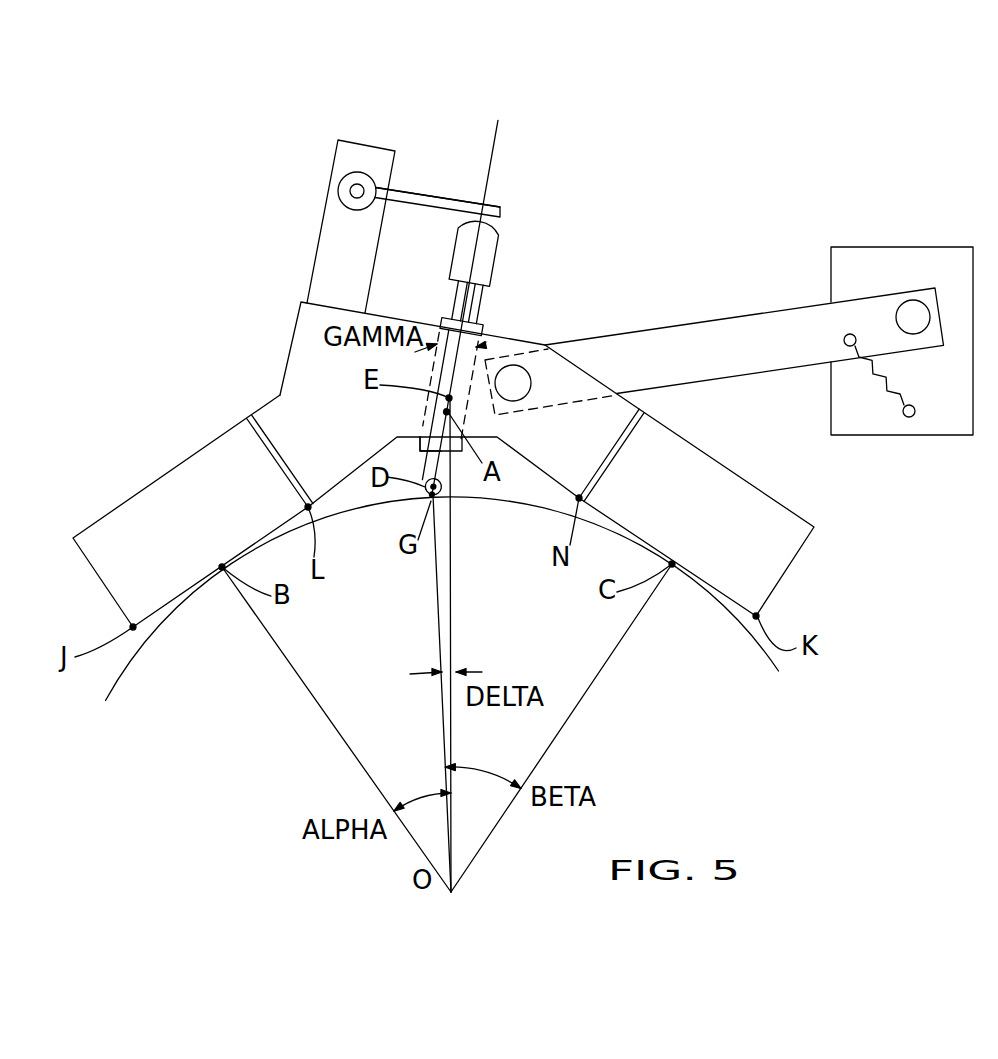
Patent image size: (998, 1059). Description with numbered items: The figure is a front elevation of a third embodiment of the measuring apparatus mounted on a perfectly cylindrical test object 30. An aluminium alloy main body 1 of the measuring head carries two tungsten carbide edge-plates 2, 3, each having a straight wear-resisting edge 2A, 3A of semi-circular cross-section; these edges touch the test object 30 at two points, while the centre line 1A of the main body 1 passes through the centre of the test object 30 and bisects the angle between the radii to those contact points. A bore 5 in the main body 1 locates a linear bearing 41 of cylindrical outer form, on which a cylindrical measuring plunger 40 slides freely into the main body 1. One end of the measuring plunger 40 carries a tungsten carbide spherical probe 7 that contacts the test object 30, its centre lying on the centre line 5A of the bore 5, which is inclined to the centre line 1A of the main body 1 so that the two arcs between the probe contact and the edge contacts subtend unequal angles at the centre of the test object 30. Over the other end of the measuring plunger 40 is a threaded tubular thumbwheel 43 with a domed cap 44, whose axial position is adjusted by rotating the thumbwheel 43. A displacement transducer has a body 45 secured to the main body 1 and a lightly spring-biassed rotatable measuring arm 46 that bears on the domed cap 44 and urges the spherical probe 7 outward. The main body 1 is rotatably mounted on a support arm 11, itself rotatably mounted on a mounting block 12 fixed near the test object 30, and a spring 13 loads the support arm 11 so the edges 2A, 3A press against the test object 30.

The main body 1 is at (290, 420).
The centre line of the main body 1A is at (452, 602).
The edge-plate 2 is at (193, 483).
The wear resisting edge 2A is at (160, 612).
The edge-plate 3 is at (745, 507).
The wear resisting edge 3A is at (728, 609).
The bore 5 is at (493, 336).
The centre line of the bore 5A is at (473, 310).
The spherical probe 7 is at (433, 498).
The support arm 11 is at (728, 338).
The mounting block 12 is at (889, 260).
The spring 13 is at (850, 386).
The test object 30 is at (122, 672).
The measuring plunger 40 is at (425, 455).
The linear bearing 41 is at (422, 437).
The tubular thumbwheel 43 is at (488, 262).
The domed cap 44 is at (501, 212).
The body of the displacement transducer 45 is at (340, 247).
The measuring arm 46 is at (442, 198).